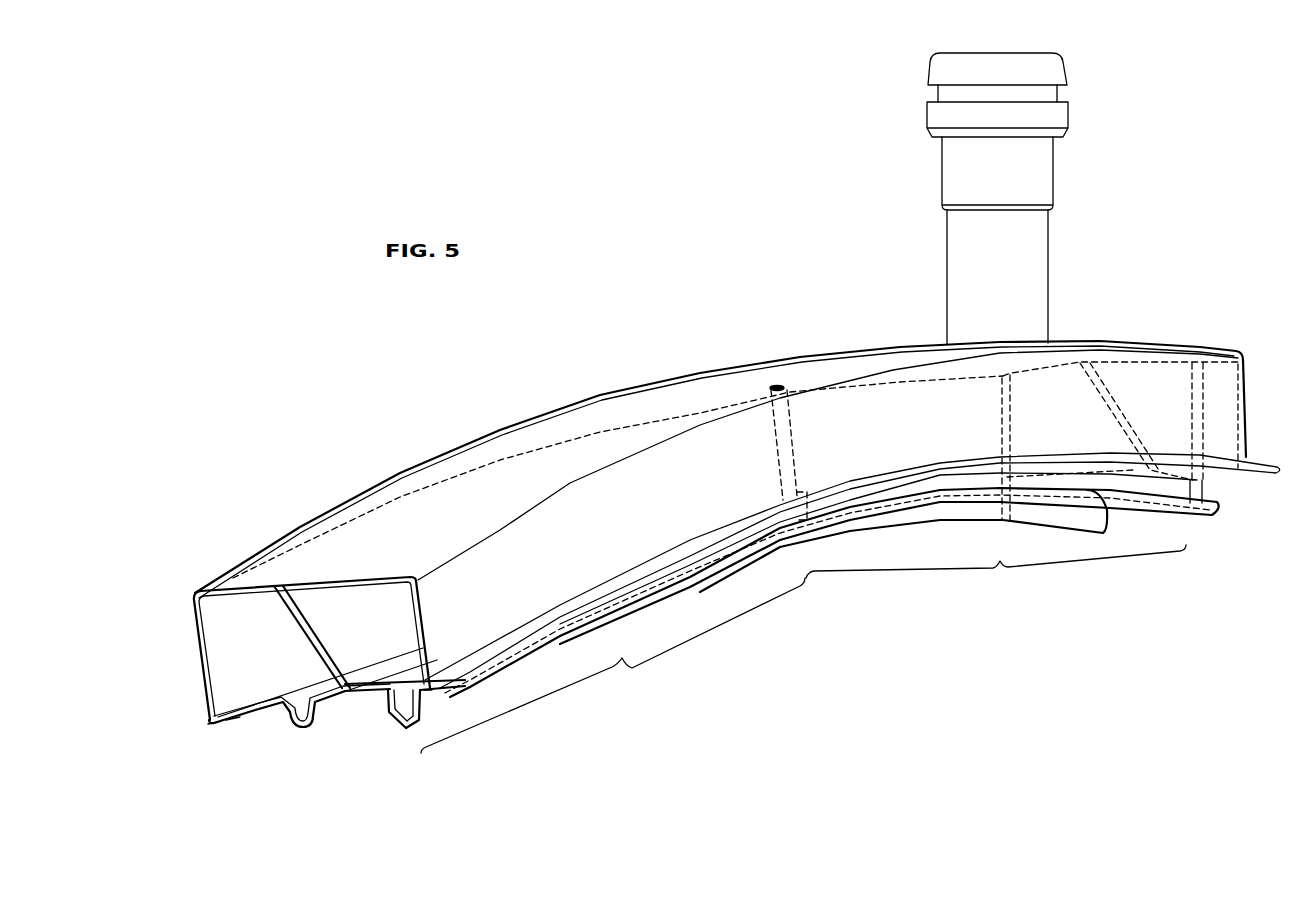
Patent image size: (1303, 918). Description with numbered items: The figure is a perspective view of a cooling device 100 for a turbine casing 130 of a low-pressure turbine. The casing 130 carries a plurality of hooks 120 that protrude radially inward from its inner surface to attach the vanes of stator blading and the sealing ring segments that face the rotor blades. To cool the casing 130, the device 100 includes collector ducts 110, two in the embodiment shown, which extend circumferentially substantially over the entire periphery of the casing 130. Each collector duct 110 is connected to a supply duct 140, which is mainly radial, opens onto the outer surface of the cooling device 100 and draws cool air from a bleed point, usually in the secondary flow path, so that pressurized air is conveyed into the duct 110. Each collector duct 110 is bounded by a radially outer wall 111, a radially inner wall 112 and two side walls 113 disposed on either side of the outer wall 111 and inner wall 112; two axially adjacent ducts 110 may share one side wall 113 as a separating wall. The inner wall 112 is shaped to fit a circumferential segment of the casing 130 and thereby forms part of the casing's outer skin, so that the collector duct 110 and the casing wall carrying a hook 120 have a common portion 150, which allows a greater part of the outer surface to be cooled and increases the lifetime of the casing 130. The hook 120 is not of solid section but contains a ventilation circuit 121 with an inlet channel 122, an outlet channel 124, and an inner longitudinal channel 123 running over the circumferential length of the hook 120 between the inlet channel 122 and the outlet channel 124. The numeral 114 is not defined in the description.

The cooling device 100 is at (662, 138).
The collector duct 110 is at (703, 542).
The outer wall 111 is at (660, 400).
The inner wall 112 is at (351, 694).
The side wall 113 is at (858, 433).
The side wall 114 is at (198, 653).
The hook 120 is at (385, 745).
The ventilation circuit 121 is at (803, 649).
The inlet channel 122 is at (386, 680).
The inner longitudinal channel 123 is at (700, 560).
The outlet channel 124 is at (776, 380).
The turbine casing 130 is at (197, 728).
The supply duct 140 is at (1083, 207).
The common portion 150 is at (233, 728).